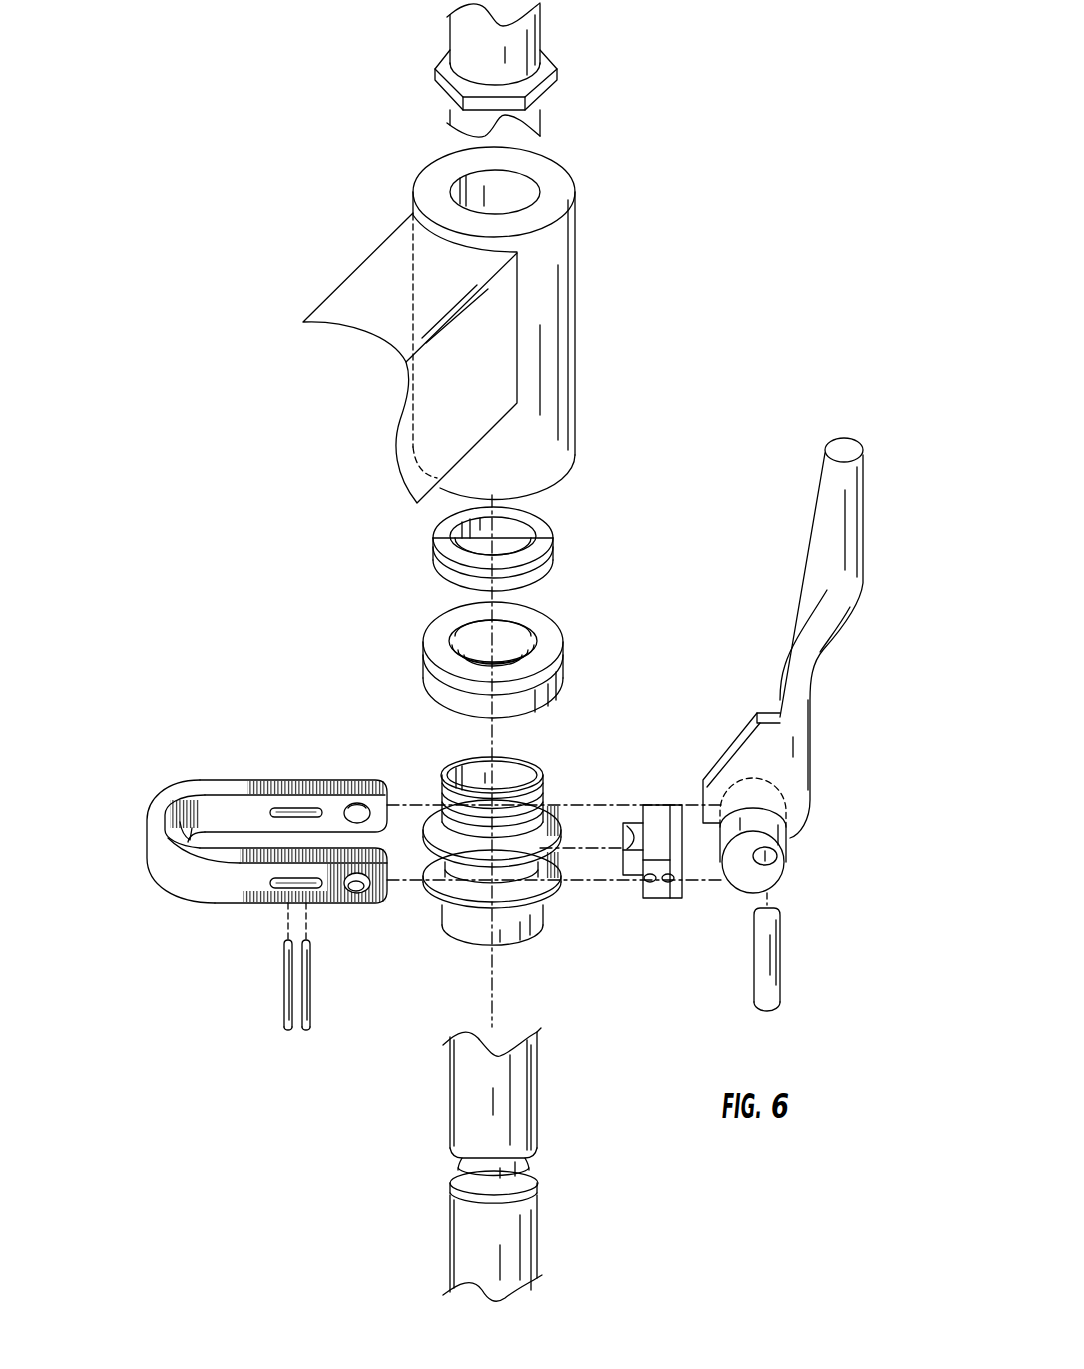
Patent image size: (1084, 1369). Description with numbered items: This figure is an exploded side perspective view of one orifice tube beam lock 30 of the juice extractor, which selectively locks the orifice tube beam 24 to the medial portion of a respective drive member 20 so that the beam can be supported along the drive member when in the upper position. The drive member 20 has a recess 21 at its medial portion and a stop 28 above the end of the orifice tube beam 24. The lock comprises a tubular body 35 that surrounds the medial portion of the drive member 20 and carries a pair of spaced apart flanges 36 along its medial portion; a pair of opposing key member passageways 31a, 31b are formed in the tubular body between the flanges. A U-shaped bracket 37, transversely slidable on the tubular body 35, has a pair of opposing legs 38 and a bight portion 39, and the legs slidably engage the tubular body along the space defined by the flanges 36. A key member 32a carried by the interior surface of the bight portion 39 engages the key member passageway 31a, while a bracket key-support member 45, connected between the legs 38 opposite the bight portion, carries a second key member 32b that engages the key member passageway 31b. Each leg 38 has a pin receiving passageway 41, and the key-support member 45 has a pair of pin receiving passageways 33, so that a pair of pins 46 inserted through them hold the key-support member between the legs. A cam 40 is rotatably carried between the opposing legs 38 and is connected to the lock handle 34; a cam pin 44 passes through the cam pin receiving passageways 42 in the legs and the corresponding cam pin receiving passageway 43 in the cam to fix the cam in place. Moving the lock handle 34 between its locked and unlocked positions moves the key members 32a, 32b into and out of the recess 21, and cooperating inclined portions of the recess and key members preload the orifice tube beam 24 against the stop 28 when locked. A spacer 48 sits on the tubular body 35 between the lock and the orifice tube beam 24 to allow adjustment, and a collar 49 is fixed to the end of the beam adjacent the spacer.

The drive member 20 is at (448, 1113).
The recess 21 is at (535, 1167).
The orifice tube beam 24 is at (348, 273).
The stop 28 is at (557, 68).
The orifice tube beam lock 30 is at (362, 640).
The key member passageway 31a is at (435, 868).
The key member passageway 31b is at (565, 865).
The key member 32a is at (197, 825).
The key member 32b is at (633, 823).
The pin receiving passageways 33 is at (647, 884).
The lock handle 34 is at (863, 520).
The tubular body 35 is at (437, 778).
The flanges 36 is at (563, 828).
The U-shaped bracket 37 is at (160, 896).
The opposing legs 38 is at (235, 780).
The bight portion 39 is at (148, 815).
The cam 40 is at (793, 837).
The pin receiving passageway 41 is at (303, 810).
The cam pin receiving passageway 42 is at (356, 802).
The cam pin receiving passageway 43 is at (773, 866).
The cam pin 44 is at (780, 985).
The bracket key-support member 45 is at (652, 805).
The pins 46 is at (290, 1030).
The spacer 48 is at (564, 673).
The collar 49 is at (433, 550).